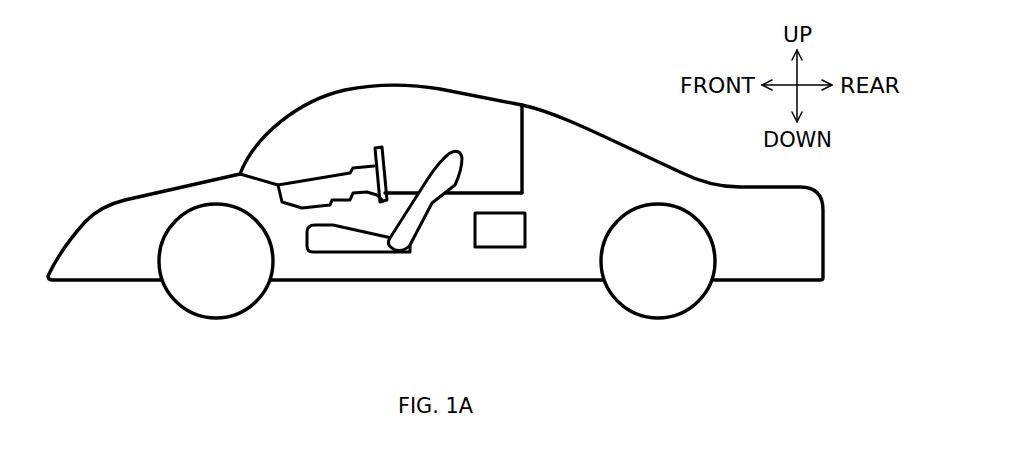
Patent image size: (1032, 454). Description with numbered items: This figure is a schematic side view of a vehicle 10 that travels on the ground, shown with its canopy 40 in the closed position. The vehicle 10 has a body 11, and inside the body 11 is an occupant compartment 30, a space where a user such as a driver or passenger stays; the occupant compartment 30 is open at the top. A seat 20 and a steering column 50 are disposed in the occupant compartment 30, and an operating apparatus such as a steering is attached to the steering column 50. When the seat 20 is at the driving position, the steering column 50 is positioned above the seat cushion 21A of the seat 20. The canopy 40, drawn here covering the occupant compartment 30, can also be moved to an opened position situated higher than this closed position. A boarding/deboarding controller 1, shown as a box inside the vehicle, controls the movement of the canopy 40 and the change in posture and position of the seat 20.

The boarding/deboarding controller 1 is at (502, 233).
The vehicle 10 is at (613, 92).
The body 11 is at (550, 128).
The seat 20 is at (394, 249).
The seat cushion 21A is at (345, 243).
The occupant compartment 30 is at (421, 173).
The canopy 40 is at (437, 108).
The steering column 50 is at (308, 190).